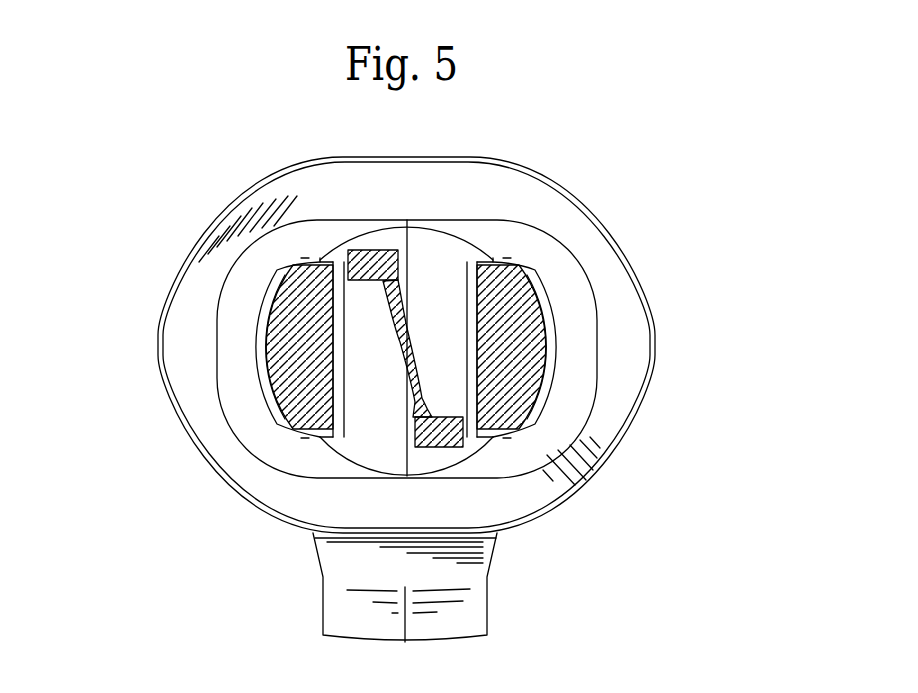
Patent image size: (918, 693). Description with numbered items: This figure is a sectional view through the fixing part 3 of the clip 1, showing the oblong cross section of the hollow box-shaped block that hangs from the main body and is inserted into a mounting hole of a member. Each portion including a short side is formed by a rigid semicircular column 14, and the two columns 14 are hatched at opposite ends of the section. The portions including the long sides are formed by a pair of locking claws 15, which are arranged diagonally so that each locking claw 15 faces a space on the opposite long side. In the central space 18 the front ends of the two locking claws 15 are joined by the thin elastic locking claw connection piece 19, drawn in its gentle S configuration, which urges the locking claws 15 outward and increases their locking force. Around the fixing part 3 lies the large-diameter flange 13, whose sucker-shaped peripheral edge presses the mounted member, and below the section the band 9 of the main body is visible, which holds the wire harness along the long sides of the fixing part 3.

The clip 1 is at (416, 390).
The fixing part 3 is at (549, 347).
The band 9 is at (487, 607).
The flange 13 is at (197, 332).
The semicircular column 14 is at (297, 371).
The locking claw 15 is at (376, 262).
The space 18 is at (362, 398).
The locking claw connection piece 19 is at (413, 397).